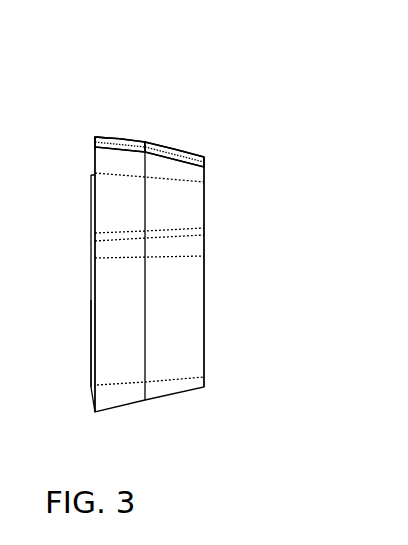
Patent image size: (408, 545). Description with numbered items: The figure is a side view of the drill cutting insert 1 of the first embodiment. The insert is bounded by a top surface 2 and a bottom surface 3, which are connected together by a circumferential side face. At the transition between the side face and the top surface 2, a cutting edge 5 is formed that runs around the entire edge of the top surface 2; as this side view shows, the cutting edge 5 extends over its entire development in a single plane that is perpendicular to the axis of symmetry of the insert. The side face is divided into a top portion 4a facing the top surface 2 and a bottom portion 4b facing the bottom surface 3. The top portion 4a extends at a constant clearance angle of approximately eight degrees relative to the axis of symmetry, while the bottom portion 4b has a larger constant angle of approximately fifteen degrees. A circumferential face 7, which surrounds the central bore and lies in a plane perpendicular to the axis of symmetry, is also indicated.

The drill cutting insert 1 is at (184, 70).
The top surface 2 is at (92, 161).
The bottom surface 3 is at (207, 271).
The top portion 4a is at (119, 137).
The bottom portion 4b is at (173, 153).
The cutting edge 5 is at (93, 132).
The circumferential face 7 is at (92, 325).